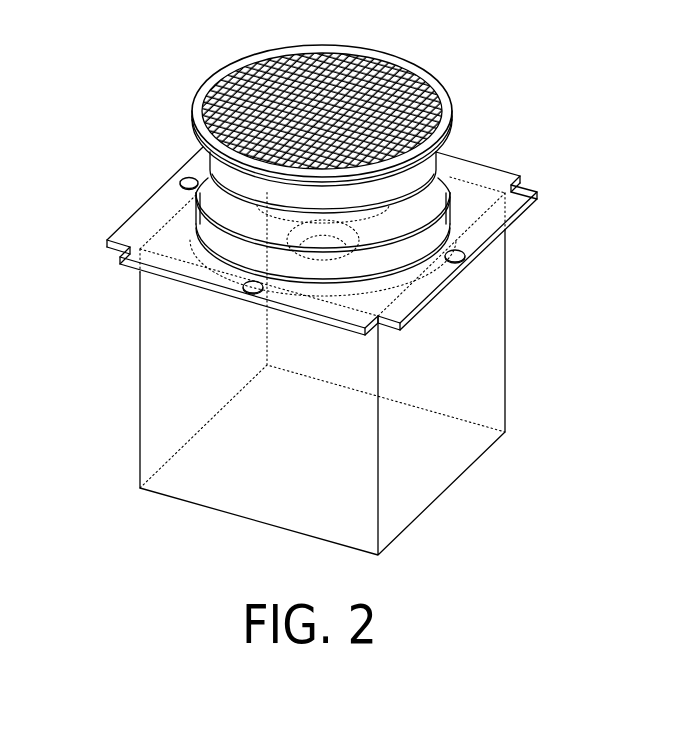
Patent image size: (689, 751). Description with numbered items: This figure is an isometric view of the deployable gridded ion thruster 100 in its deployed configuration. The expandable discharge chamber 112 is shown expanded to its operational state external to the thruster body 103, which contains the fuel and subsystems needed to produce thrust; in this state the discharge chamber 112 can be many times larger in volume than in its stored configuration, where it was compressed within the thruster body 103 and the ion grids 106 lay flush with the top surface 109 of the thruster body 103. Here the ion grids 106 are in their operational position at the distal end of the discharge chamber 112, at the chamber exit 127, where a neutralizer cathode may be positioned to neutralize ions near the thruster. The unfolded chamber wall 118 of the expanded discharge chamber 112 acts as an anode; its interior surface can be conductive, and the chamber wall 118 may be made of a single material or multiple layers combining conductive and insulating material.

The deployable gridded ion thruster 100 is at (134, 116).
The thruster body 103 is at (505, 322).
The ion grids 106 is at (433, 82).
The top surface 109 is at (497, 186).
The discharge chamber 112 is at (447, 165).
The chamber wall 118 is at (212, 161).
The chamber exit 127 is at (392, 38).